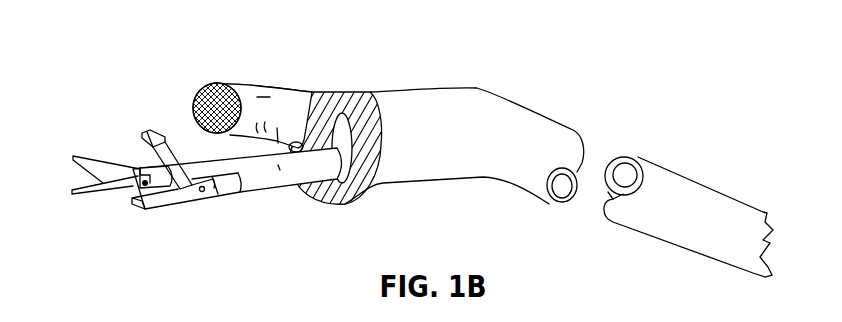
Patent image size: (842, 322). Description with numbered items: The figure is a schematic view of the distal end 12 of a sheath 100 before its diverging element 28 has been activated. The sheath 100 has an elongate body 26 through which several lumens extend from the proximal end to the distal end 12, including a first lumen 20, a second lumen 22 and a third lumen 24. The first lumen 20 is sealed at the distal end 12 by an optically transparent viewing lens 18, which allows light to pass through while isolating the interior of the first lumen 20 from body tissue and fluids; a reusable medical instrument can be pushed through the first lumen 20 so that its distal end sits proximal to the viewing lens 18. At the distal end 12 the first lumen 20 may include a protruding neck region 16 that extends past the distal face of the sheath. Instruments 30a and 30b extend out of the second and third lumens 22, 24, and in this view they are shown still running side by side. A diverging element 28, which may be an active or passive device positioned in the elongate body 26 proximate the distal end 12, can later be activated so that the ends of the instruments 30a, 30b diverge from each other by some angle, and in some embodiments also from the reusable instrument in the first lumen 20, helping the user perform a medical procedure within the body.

The sheath 100 is at (487, 85).
The protruding neck region 16 is at (273, 83).
The viewing lens 18 is at (197, 95).
The third lumen 24 is at (282, 157).
The elongate body 26 is at (428, 118).
The diverging element 28 is at (350, 98).
The second lumen 22 is at (336, 201).
The distal end 12 is at (207, 195).
The instrument 30a is at (262, 183).
The instrument 30b is at (217, 163).
The first lumen 20 is at (625, 170).